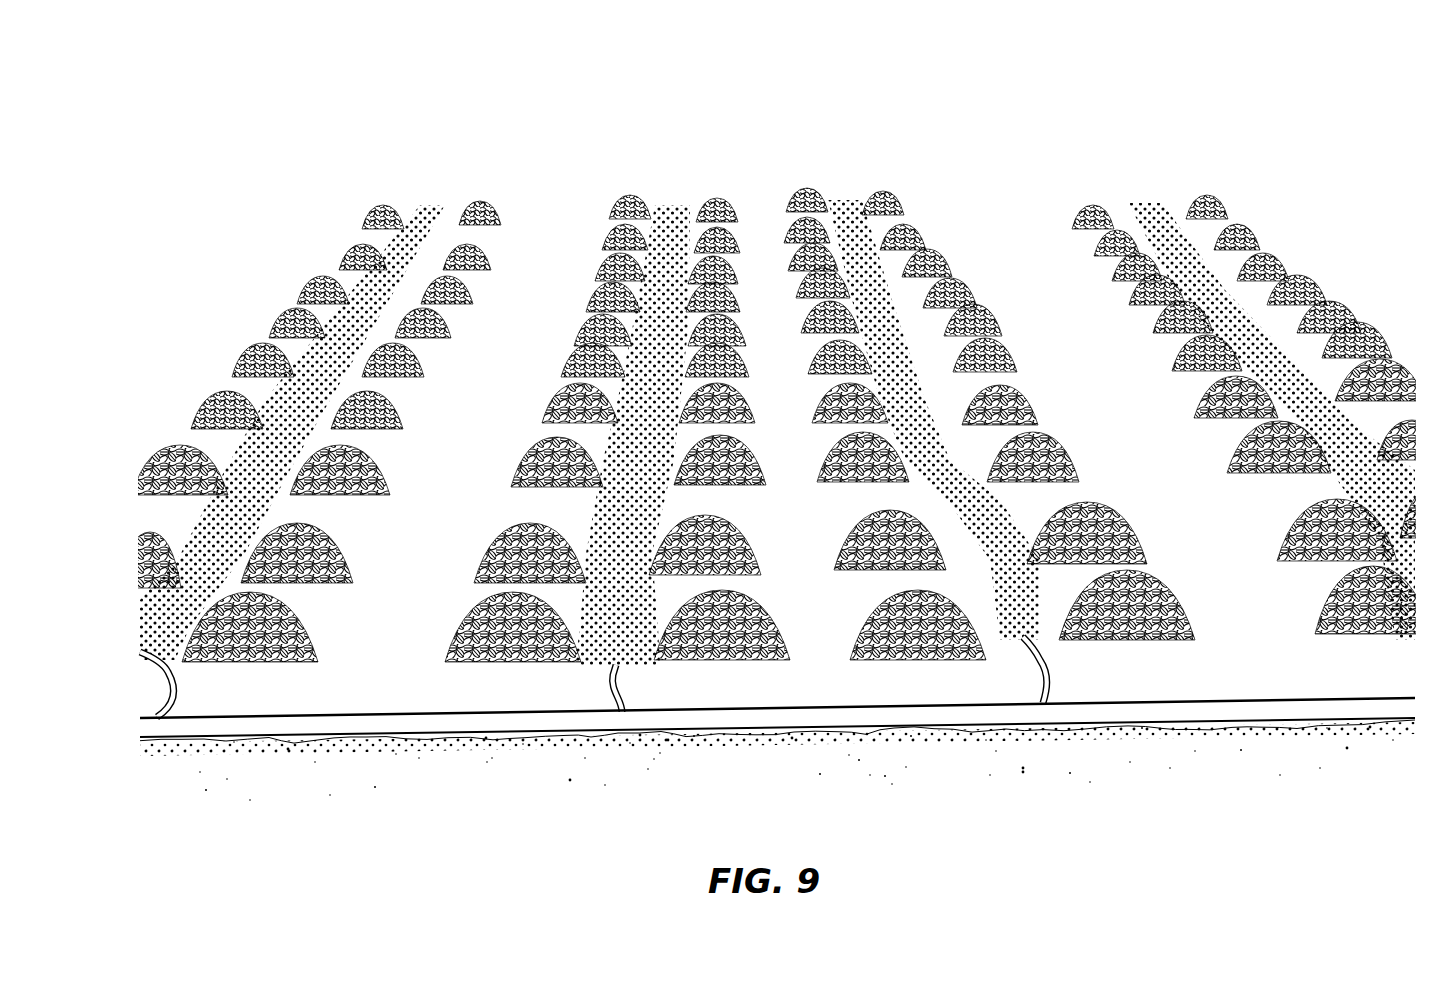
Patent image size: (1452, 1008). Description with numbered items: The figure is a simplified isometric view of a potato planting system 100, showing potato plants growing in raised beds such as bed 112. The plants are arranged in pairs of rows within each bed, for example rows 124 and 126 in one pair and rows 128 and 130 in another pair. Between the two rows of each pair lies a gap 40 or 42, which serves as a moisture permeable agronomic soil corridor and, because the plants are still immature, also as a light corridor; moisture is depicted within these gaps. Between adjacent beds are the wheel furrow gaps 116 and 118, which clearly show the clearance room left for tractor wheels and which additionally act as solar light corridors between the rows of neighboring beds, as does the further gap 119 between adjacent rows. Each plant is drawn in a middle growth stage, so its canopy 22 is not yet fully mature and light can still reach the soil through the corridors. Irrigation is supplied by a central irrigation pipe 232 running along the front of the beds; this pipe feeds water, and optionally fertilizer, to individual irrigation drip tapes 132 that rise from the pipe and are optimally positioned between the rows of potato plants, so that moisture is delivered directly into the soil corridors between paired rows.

The seed planting and irrigation system 100 is at (1292, 86).
The bed 112 is at (615, 132).
The wheel furrow gap 116 is at (534, 222).
The wheel furrow gap 118 is at (1018, 222).
The gap 40 is at (544, 473).
The gap 119 is at (718, 469).
The gap 42 is at (912, 472).
The canopy 22 is at (1070, 443).
The row 124 is at (492, 688).
The row 126 is at (748, 672).
The row 128 is at (940, 672).
The row 130 is at (1172, 660).
The irrigation drip tape 132 is at (174, 697).
The central irrigation pipe 232 is at (1336, 705).